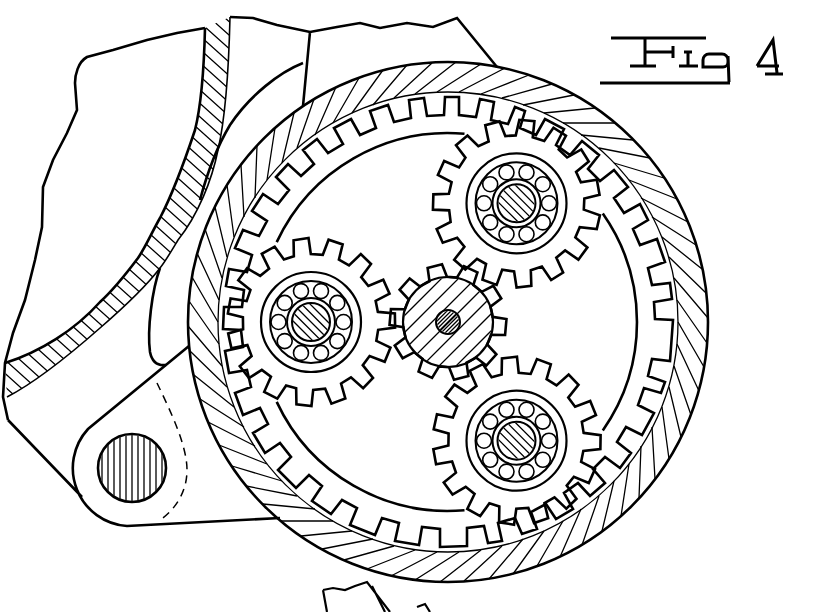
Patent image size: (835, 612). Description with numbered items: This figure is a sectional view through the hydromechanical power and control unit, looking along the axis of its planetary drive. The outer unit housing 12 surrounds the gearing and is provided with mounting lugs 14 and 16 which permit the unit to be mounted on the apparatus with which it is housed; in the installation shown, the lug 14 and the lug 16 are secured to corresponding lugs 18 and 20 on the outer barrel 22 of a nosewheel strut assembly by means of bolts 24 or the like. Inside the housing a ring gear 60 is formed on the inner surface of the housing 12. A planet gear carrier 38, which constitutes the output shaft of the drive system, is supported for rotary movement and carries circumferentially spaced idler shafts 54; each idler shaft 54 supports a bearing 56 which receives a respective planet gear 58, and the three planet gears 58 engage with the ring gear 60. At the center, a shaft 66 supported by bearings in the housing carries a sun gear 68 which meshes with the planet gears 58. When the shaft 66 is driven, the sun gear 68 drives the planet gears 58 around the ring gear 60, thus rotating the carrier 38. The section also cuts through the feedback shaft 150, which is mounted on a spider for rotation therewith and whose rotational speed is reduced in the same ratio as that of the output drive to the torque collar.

The outer unit housing 12 is at (688, 222).
The mounting lug 14 is at (236, 521).
The mounting lug 16 is at (467, 52).
The lug 18 is at (148, 358).
The lug 20 is at (253, 53).
The outer barrel 22 is at (93, 337).
The bolt 24 is at (133, 495).
The planet gear carrier 38 is at (618, 352).
The idler shaft 54 is at (328, 305).
The bearing 56 is at (320, 262).
The planet gear 58 is at (434, 183).
The ring gear 60 is at (645, 285).
The shaft 66 is at (483, 318).
The sun gear 68 is at (440, 376).
The feedback shaft 150 is at (433, 305).